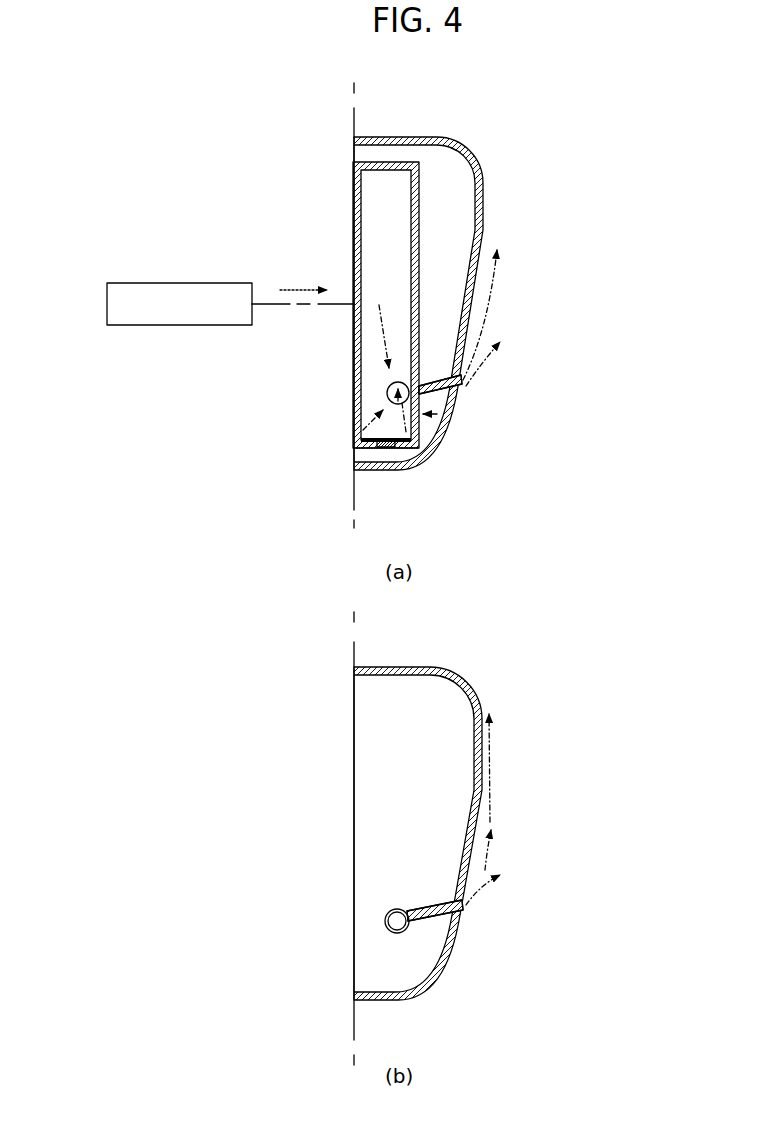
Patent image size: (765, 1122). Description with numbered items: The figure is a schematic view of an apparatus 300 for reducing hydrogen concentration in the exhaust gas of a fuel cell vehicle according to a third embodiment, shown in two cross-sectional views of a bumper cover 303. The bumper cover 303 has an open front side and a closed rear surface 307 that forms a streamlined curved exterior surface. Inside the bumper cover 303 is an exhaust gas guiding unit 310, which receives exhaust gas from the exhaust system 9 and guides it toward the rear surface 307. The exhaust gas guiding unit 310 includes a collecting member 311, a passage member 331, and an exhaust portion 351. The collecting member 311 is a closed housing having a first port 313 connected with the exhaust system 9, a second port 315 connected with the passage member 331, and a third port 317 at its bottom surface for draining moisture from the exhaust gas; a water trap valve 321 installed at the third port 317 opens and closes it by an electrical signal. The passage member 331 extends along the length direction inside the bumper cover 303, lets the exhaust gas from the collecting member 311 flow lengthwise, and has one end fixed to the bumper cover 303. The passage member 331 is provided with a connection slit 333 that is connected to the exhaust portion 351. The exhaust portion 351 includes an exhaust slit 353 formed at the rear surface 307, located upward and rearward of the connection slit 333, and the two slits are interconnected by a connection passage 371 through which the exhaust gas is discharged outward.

The exhaust system 9 is at (107, 304).
The apparatus for reducing hydrogen concentration 300 is at (238, 104).
The bumper cover 303 is at (475, 155).
The rear surface 307 is at (483, 228).
The exhaust gas guiding unit 310 is at (540, 407).
The collecting member 311 is at (447, 420).
The first port 313 is at (354, 316).
The second port 315 is at (387, 393).
The third port 317 is at (357, 462).
The water trap valve 321 is at (392, 450).
The passage member 331 is at (433, 443).
The connection slit 333 is at (400, 934).
The exhaust portion 351 is at (458, 391).
The exhaust slit 353 is at (462, 382).
The connection passage 371 is at (440, 383).